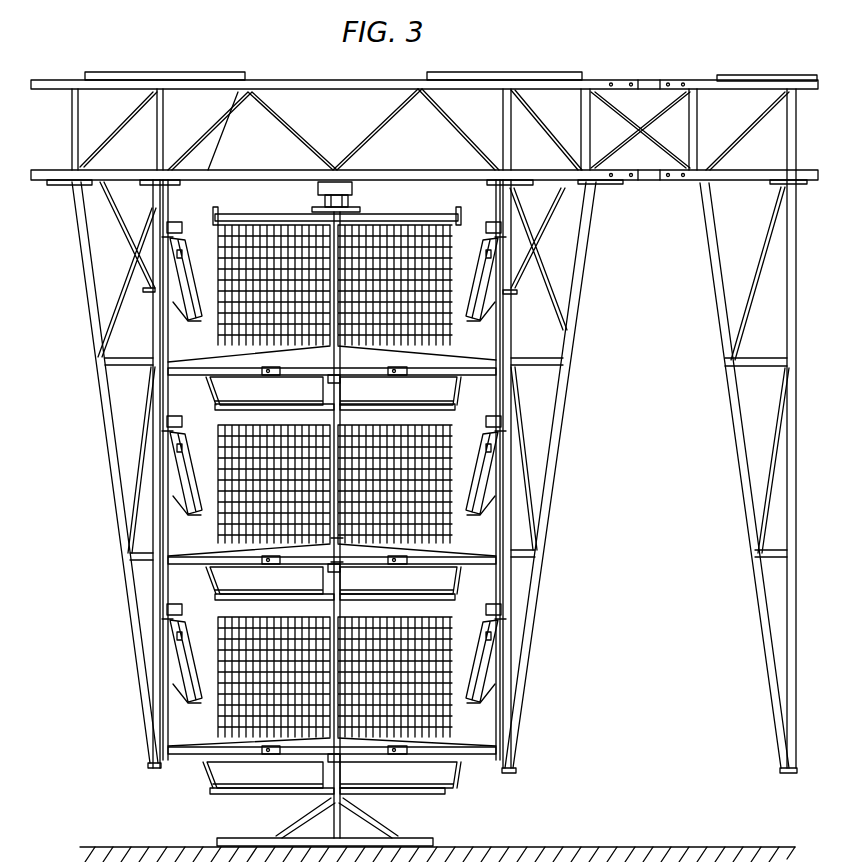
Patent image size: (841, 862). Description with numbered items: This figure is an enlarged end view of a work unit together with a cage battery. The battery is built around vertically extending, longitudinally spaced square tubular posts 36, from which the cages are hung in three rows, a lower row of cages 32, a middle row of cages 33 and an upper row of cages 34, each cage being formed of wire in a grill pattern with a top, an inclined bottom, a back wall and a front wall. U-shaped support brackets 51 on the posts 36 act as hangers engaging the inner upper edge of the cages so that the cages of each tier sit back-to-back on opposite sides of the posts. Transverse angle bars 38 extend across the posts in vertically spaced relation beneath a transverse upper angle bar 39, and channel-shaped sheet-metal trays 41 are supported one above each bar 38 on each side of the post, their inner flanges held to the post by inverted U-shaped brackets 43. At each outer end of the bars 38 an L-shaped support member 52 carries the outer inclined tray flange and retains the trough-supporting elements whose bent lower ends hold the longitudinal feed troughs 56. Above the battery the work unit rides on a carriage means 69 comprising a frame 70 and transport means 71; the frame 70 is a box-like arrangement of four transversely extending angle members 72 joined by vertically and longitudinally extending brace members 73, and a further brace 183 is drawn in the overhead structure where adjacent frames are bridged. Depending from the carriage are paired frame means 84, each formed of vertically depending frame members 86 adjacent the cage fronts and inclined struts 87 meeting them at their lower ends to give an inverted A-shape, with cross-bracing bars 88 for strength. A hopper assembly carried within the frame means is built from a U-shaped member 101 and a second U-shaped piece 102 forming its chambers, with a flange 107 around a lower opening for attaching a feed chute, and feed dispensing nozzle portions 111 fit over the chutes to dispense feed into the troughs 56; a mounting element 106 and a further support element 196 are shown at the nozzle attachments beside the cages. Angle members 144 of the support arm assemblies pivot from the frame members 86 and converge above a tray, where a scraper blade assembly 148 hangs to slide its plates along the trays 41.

The lower row of cages 32 is at (235, 722).
The middle row of cages 33 is at (240, 530).
The upper row of cages 34 is at (240, 332).
The post 36 is at (331, 548).
The transverse angle bar 38 is at (272, 413).
The transverse upper angle bar 39 is at (276, 222).
The tray 41 is at (210, 383).
The inverted U-shaped bracket 43 is at (342, 381).
The U-shaped support bracket 51 is at (348, 235).
The L-shaped support member 52 is at (371, 406).
The feed trough 56 is at (202, 322).
The carriage means 69 is at (365, 78).
The frame 70 is at (278, 73).
The transport means 71 is at (312, 203).
The transversely extending angle member 72 is at (312, 80).
The brace member 73 is at (120, 127).
The frame means 84 is at (82, 342).
The frame member 86 is at (157, 343).
The inclined strut 87 is at (110, 456).
The cross-bracing bar 88 is at (125, 280).
The U-shaped member 101 is at (460, 155).
The second U-shaped piece 102 is at (146, 203).
The feeder mounting bracket 106 is at (480, 222).
The flange 107 is at (142, 294).
The feed dispensing nozzle portion 111 is at (202, 276).
The angle member 144 is at (255, 368).
The scraper blade assembly 148 is at (283, 397).
The truss X brace 183 is at (637, 148).
The feeder support bracket 196 is at (212, 605).